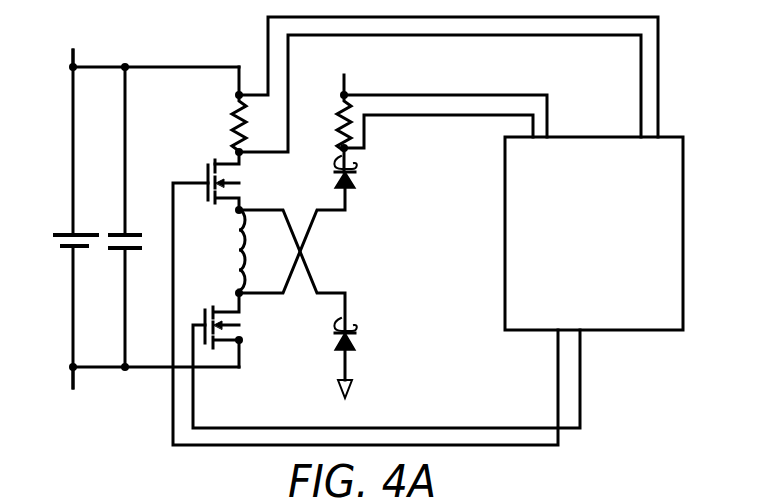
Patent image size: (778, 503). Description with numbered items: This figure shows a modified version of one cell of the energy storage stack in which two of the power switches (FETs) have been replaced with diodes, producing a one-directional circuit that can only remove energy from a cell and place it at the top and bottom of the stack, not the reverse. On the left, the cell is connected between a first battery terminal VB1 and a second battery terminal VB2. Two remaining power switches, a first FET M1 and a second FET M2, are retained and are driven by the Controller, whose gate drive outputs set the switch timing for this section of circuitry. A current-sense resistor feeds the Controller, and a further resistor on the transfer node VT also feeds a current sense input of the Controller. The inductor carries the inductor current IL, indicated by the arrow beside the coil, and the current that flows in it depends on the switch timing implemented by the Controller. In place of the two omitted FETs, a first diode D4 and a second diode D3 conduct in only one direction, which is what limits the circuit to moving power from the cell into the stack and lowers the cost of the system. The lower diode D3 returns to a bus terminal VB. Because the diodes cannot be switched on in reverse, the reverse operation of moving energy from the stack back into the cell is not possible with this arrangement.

The first battery voltage terminal VB1 is at (70, 44).
The second battery voltage terminal VB2 is at (70, 391).
The first MOSFET switch M1 is at (363, 302).
The second MOSFET switch M2 is at (386, 357).
The inductor current IL is at (222, 232).
The transfer voltage node VT is at (343, 77).
The fourth diode D4 is at (358, 175).
The third diode D3 is at (357, 334).
The bus voltage terminal VB is at (354, 379).
The controller Controller is at (594, 233).